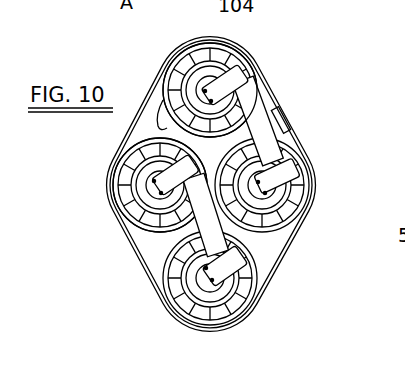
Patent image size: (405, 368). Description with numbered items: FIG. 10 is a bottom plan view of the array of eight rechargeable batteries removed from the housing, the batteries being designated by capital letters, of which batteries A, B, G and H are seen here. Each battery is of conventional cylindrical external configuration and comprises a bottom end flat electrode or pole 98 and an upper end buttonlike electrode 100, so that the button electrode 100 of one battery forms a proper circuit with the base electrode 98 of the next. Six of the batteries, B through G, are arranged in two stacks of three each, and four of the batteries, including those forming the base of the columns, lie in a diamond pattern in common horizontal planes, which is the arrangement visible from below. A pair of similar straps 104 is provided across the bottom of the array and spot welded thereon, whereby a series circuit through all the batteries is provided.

The upper end buttonlike electrode 100 is at (198, 90).
The strap 104 is at (210, 103).
The bottom end flat electrode 98 is at (305, 190).
The battery A is at (238, 58).
The battery B is at (292, 215).
The battery G is at (137, 212).
The battery H is at (245, 298).